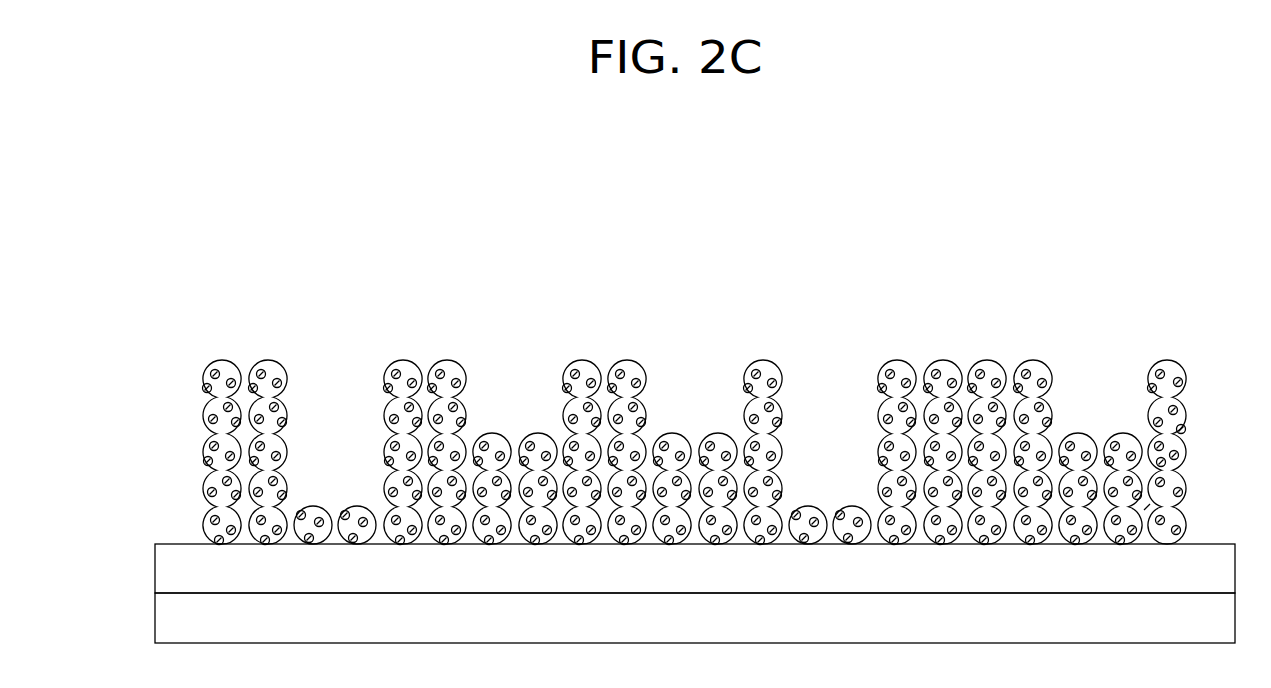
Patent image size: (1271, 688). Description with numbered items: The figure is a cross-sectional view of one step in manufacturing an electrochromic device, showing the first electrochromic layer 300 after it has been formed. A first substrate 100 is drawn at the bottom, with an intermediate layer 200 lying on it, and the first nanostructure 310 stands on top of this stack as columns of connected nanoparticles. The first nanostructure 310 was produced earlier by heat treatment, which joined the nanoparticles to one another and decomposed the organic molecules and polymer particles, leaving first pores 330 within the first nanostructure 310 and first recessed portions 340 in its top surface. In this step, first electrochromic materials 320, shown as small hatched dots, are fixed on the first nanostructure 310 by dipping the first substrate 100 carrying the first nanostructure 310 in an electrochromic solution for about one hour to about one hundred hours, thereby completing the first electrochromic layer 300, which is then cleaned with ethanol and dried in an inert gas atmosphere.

The first substrate 100 is at (165, 620).
The electrode layer 200 is at (165, 568).
The first electrochromic layer 300 is at (693, 425).
The first nanostructure 310 is at (1203, 452).
The first electrochromic materials 320 is at (1179, 455).
The first pores 330 is at (1146, 509).
The first recessed portions 340 is at (1054, 416).